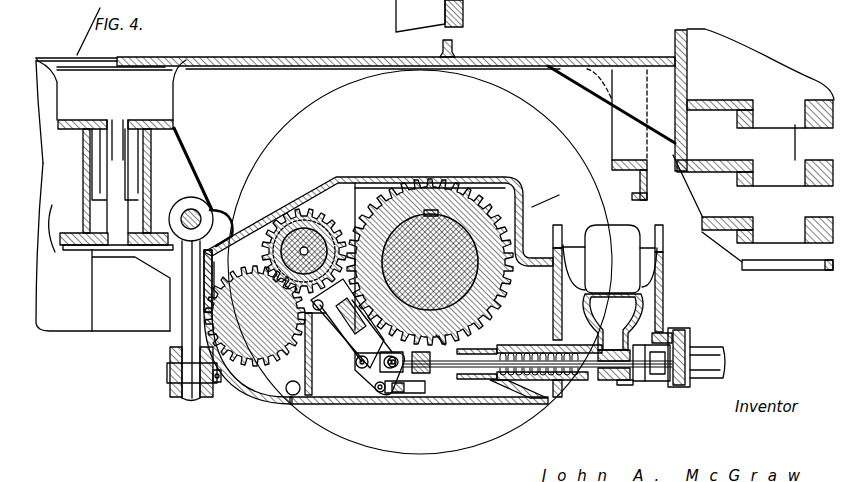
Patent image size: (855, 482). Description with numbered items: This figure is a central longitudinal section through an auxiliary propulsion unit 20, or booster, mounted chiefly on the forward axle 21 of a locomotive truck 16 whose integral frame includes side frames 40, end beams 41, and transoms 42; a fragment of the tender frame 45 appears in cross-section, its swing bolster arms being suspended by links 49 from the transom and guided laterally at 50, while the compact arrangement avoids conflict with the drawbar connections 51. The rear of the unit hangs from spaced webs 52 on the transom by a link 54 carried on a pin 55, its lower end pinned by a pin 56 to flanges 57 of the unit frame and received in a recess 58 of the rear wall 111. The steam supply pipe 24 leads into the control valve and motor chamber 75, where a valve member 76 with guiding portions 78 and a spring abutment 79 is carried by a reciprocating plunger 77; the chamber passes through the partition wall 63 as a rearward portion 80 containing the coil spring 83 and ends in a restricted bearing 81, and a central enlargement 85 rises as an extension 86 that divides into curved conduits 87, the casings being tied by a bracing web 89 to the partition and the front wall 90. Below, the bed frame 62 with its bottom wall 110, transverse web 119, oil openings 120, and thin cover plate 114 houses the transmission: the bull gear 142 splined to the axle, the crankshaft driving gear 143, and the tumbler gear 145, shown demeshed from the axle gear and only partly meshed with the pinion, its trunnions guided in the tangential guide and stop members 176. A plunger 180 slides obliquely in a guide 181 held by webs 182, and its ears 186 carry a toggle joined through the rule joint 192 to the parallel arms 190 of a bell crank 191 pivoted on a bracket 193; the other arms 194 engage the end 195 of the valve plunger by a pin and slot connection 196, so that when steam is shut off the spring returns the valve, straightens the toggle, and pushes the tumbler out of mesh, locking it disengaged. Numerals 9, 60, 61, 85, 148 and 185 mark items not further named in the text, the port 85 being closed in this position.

The shaft 9 is at (286, 230).
The truck 16 is at (178, 108).
The auxiliary unit 20 is at (556, 192).
The forward axle 21 is at (452, 220).
The steam supply pipe 24 is at (724, 350).
The side frames 40 is at (265, 67).
The end beams 41 is at (648, 185).
The transoms 42 is at (177, 129).
The tender frame 45 is at (327, 57).
The links 49 is at (115, 155).
The guided portion of bolster 50 is at (60, 245).
The drawbar connections 51 is at (793, 178).
The spaced webs 52 is at (203, 168).
The link 54 is at (185, 284).
The pin 55 is at (190, 205).
The pin 56 is at (168, 378).
The flanges 57 is at (205, 399).
The recess 58 is at (180, 325).
The casing wall 60 is at (258, 396).
The nut lower 61 is at (598, 384).
The bed frame 62 is at (356, 397).
The partition wall 63 is at (553, 300).
The control valve and motor chamber 75 is at (655, 383).
The valve member 76 is at (637, 385).
The reciprocating plunger 77 is at (533, 349).
The guiding portions 78 is at (675, 340).
The spring abutment 79 is at (598, 350).
The rearward portion of chamber 80 is at (494, 348).
The restricted rearward end 81 is at (476, 370).
The coil spring 83 is at (512, 396).
The central enlargement 85 is at (620, 388).
The upward extension 86 is at (608, 322).
The curved conduits 87 is at (628, 250).
The integral bracing web 89 is at (610, 267).
The front wall 90 is at (664, 273).
The bottom wall 110 is at (453, 406).
The rear wall 111 is at (231, 281).
The cover plate 114 is at (360, 187).
The transverse web 119 is at (306, 353).
The openings 120 is at (300, 396).
The main gear 142 is at (410, 203).
The driving gear portion 143 is at (235, 312).
The tumbler gear 145 is at (301, 205).
The body 148 is at (100, 322).
The guide, bearing, and stop members 176 is at (341, 256).
The plunger 180 is at (352, 345).
The guide 181 is at (341, 345).
The webs 182 is at (370, 335).
The pinion circle 185 is at (278, 246).
The ears 186 is at (246, 355).
The parallel arms 190 is at (378, 372).
The bell crank lever 191 is at (379, 396).
The rule joint 192 is at (308, 398).
The bracket 193 is at (398, 395).
The parallel arms 194 is at (423, 391).
The end of plunger 195 is at (432, 356).
The pin and slot connection 196 is at (445, 330).